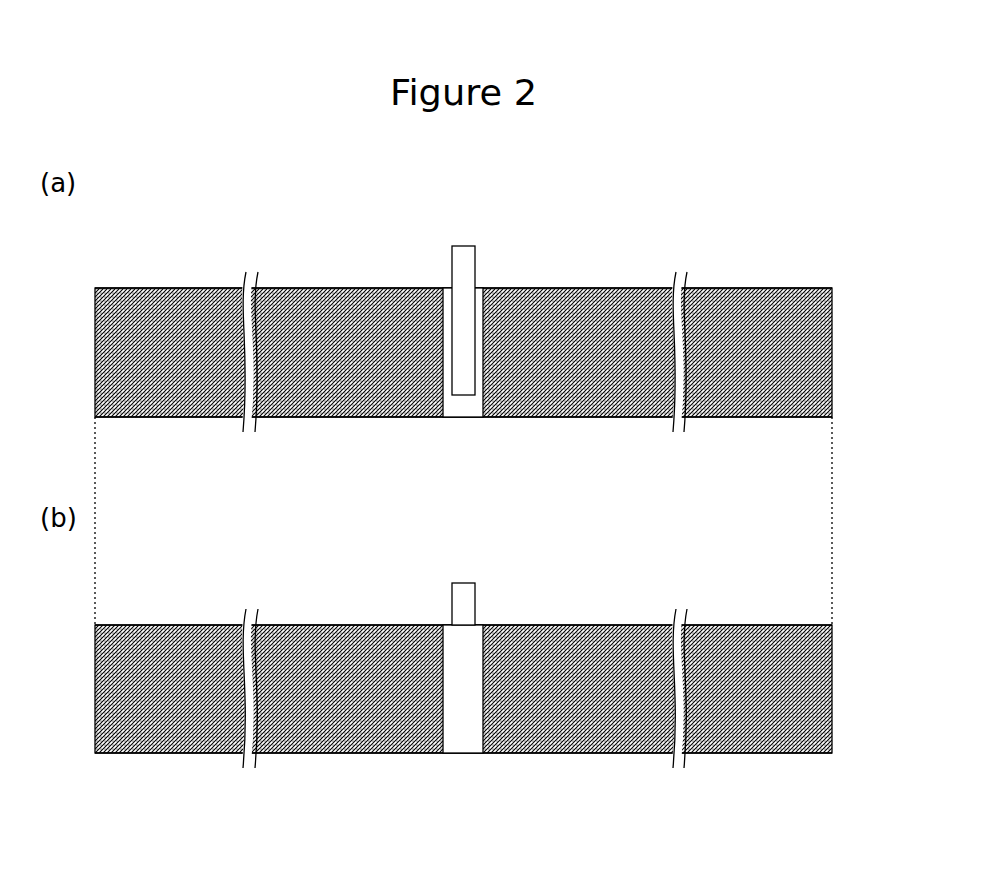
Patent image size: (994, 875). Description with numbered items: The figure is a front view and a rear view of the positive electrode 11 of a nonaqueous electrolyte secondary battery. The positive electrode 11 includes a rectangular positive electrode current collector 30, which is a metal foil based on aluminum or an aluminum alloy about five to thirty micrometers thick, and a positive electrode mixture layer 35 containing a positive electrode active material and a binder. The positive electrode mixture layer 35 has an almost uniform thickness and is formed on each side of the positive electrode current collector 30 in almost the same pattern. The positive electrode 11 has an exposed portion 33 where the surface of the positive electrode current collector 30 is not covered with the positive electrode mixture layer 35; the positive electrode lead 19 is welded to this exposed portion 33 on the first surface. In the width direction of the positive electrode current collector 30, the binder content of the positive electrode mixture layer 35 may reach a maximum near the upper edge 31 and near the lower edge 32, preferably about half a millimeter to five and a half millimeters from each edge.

The positive electrode 11 is at (800, 163).
The positive electrode lead 19 is at (463, 258).
The positive electrode current collector 30 is at (797, 288).
The upper edge 31 is at (174, 288).
The lower edge 32 is at (173, 417).
The exposed portion 33 is at (462, 405).
The positive electrode mixture layer 35 is at (722, 312).